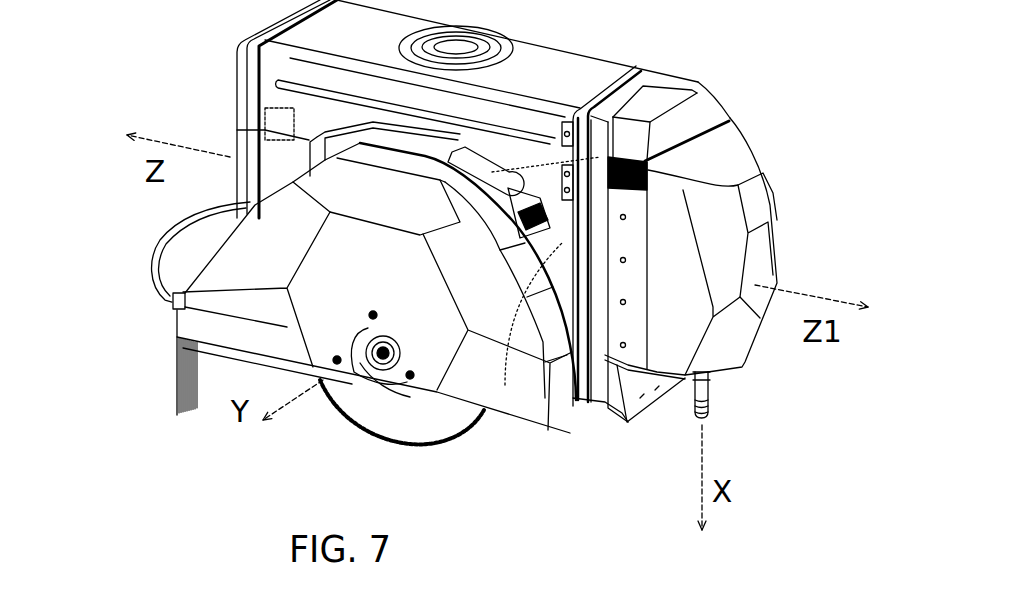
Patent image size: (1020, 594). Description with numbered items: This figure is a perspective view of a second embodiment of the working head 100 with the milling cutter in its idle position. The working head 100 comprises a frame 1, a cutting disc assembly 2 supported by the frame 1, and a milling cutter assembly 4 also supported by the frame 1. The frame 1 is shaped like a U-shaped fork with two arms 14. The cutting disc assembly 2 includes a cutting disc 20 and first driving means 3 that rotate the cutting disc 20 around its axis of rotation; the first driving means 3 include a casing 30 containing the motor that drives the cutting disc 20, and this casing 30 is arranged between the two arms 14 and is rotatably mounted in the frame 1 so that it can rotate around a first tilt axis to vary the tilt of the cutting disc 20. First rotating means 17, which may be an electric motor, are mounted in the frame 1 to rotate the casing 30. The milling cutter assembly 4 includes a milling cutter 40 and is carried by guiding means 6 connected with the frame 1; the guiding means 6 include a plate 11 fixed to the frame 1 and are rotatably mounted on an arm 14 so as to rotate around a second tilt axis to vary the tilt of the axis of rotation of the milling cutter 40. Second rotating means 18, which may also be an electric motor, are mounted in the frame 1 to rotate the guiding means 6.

The working head 100 is at (227, 60).
The frame 1 is at (254, 94).
The cutting disc assembly 2 is at (477, 432).
The first driving means 3 is at (627, 150).
The milling cutter assembly 4 is at (772, 188).
The guiding means 6 is at (642, 432).
The plate 11 is at (610, 384).
The arms 14 is at (272, 153).
The first rotating means 17 is at (264, 118).
The second rotating means 18 is at (605, 201).
The cutting disc 20 is at (377, 403).
The casing 30 is at (493, 172).
The milling cutter 40 is at (710, 390).